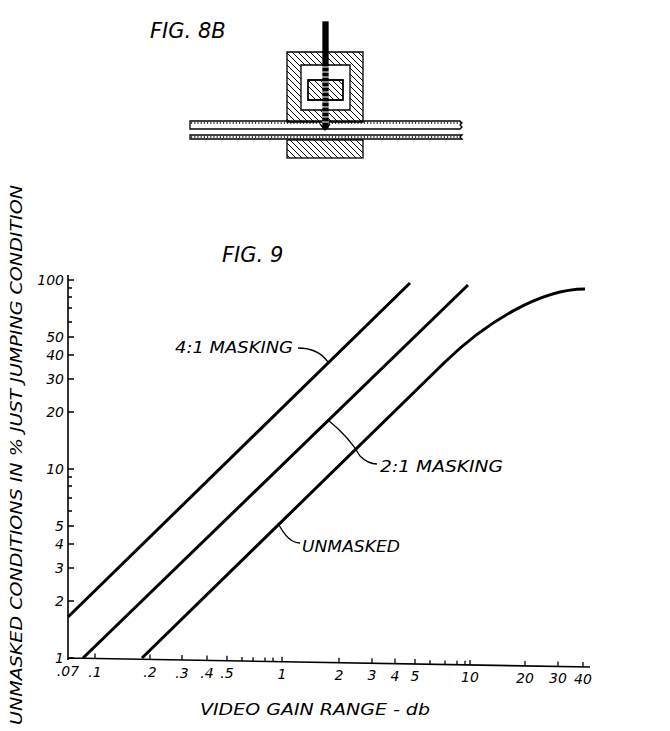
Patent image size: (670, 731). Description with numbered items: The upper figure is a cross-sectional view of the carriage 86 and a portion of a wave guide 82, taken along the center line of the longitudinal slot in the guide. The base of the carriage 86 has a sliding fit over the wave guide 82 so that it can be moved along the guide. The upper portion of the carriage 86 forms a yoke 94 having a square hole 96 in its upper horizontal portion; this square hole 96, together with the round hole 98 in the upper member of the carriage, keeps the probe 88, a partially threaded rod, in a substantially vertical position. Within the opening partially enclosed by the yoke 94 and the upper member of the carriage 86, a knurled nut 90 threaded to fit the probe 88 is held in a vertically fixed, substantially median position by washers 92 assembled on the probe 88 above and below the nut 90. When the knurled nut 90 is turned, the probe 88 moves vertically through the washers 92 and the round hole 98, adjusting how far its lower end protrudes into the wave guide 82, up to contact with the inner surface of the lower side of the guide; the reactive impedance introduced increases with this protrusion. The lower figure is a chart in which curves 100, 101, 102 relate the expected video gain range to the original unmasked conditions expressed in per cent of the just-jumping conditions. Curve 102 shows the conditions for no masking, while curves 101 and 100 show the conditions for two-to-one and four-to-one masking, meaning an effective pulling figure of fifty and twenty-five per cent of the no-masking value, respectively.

In FIG. 8B, the wave guide 82 is at (390, 142).
In FIG. 8B, the carriage 86 is at (318, 145).
In FIG. 8B, the probe 88 is at (331, 32).
In FIG. 8B, the knurled nut 90 is at (308, 88).
In FIG. 8B, the washers 92 is at (345, 98).
In FIG. 8B, the yoke 94 is at (363, 68).
In FIG. 8B, the square hole 96 is at (322, 47).
In FIG. 8B, the round hole 98 is at (320, 125).
In FIG. 9, the curve for 4:1 masking 100 is at (383, 312).
In FIG. 9, the curve for 2:1 masking 101 is at (420, 331).
In FIG. 9, the curve for no masking 102 is at (522, 307).